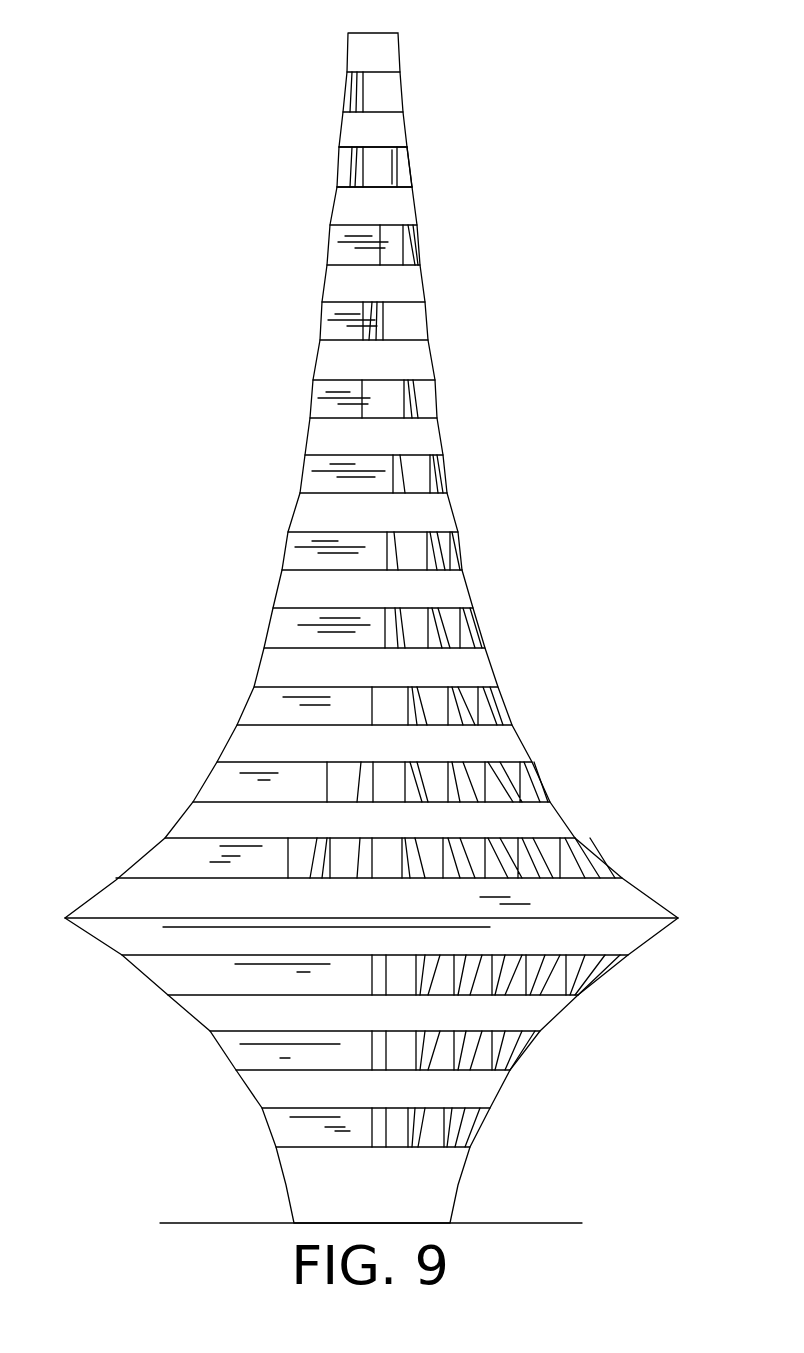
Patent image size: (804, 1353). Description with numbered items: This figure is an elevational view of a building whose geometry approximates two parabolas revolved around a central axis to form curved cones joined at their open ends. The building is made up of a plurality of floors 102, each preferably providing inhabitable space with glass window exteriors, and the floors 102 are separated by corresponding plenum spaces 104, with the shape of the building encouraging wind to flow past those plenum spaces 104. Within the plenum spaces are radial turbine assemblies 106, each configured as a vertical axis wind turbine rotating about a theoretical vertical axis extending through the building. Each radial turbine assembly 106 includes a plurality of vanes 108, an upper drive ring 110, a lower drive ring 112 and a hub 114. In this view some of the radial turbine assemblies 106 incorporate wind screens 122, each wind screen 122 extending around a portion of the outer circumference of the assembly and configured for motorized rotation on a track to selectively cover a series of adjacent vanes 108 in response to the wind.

The floor 102 is at (348, 50).
The plenum space 104 is at (345, 95).
The radial turbine assembly 106 is at (393, 83).
The vane 108 is at (412, 170).
The upper drive ring 110 is at (412, 145).
The lower drive ring 112 is at (412, 187).
The hub 114 is at (383, 152).
The wind screen 122 is at (330, 258).